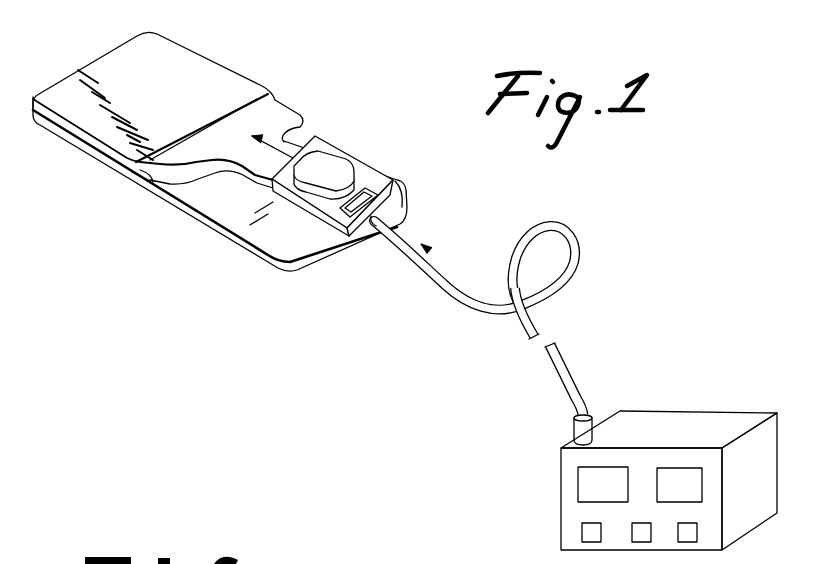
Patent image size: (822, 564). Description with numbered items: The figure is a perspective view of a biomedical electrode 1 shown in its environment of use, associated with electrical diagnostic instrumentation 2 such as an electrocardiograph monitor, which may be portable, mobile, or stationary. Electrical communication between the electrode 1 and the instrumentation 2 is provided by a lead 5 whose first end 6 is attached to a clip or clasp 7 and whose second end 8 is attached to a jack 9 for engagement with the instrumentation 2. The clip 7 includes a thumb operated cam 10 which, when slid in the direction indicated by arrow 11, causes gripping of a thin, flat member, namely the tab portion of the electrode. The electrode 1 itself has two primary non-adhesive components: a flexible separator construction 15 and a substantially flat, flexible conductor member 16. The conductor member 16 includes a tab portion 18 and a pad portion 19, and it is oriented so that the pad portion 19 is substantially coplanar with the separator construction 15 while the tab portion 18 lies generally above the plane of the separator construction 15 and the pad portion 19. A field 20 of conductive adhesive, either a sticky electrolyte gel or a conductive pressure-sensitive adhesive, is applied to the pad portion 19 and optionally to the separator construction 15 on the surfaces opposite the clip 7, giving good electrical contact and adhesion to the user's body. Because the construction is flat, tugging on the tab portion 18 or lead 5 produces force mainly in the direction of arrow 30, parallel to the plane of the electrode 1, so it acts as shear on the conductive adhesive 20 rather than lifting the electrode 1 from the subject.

The biomedical electrode 1 is at (390, 47).
The electrical diagnostic instrumentation 2 is at (728, 365).
The lead 5 is at (472, 298).
The first end 6 is at (391, 215).
The clip 7 is at (394, 182).
The second end 8 is at (588, 406).
The jack 9 is at (573, 428).
The thumb operated cam 10 is at (338, 170).
The arrow 11 is at (312, 118).
The separator construction 15 is at (221, 237).
The conductor member 16 is at (187, 58).
The tab portion 18 is at (190, 213).
The pad portion 19 is at (105, 57).
The field of conductive adhesive 20 is at (320, 269).
The arrow 30 is at (404, 251).